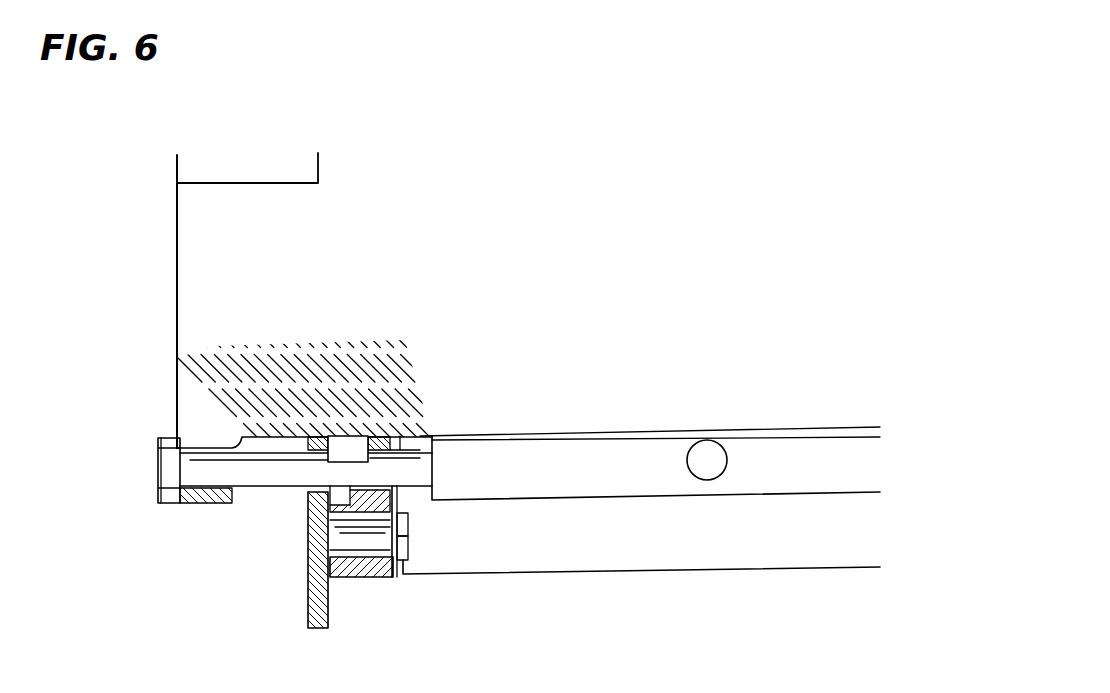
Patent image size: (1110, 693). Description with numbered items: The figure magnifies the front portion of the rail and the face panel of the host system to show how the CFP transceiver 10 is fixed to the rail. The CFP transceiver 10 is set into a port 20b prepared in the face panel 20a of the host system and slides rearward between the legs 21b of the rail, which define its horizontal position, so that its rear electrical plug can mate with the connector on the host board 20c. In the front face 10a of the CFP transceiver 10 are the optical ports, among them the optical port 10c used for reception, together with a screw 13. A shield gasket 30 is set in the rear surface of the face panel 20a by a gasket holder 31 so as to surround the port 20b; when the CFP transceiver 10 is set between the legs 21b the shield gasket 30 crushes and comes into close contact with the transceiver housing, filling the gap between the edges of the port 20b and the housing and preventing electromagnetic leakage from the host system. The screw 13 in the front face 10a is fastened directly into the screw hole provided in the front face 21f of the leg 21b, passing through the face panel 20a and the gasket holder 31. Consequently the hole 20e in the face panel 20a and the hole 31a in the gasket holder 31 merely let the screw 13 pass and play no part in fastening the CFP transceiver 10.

The CFP transceiver 10 is at (208, 272).
The front face 10a is at (177, 322).
The optical port 10c is at (212, 166).
The screw 13 is at (158, 466).
The face panel 20a is at (317, 593).
The port 20b is at (303, 437).
The host board 20c is at (672, 528).
The hole 20e is at (306, 490).
The leg 21b is at (553, 468).
The front face 21f is at (430, 447).
The shield gasket 30 is at (344, 450).
The gasket holder 31 is at (375, 573).
The hole 31a is at (421, 511).